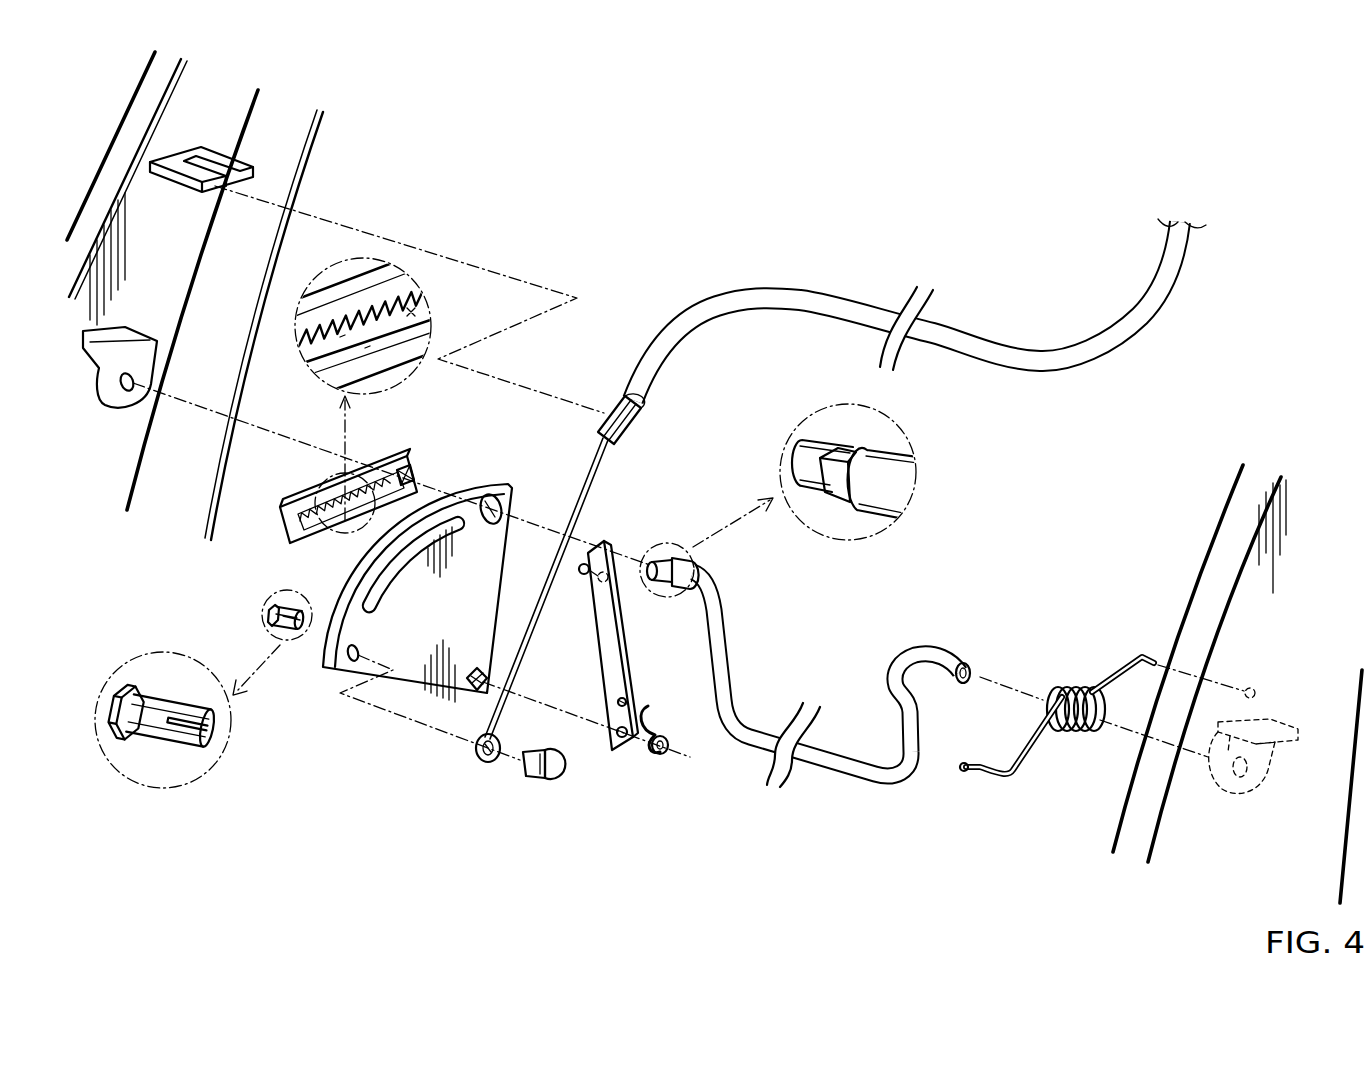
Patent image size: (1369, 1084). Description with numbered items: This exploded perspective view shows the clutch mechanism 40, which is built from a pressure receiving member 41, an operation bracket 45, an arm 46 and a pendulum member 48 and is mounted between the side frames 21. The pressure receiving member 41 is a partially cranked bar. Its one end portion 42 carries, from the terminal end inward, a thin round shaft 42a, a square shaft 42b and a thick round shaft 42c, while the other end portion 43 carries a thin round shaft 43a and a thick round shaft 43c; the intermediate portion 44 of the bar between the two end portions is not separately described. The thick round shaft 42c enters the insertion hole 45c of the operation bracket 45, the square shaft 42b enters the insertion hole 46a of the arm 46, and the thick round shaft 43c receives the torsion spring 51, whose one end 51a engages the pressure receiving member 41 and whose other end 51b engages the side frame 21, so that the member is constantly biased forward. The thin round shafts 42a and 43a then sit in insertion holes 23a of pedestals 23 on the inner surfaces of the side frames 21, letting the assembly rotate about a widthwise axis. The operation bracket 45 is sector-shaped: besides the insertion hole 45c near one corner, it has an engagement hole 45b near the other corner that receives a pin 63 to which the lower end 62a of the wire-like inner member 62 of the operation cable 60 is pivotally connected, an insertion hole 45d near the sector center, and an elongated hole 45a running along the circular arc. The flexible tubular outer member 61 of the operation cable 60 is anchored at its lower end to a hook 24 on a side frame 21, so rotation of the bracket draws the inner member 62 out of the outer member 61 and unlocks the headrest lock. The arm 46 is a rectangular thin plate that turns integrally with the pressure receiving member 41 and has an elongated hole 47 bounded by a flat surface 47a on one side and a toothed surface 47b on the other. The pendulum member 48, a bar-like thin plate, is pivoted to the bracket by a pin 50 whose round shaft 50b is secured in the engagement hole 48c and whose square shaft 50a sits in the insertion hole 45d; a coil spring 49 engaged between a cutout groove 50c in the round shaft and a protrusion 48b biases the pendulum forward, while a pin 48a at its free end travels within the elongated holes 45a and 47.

The side frame 21 is at (142, 193).
The pedestal 23 is at (695, 597).
The insertion hole 23a is at (128, 390).
The hook 24 is at (177, 160).
The clutch mechanism 40 is at (828, 561).
The pressure receiving member 41 is at (833, 633).
The one end portion 42 is at (782, 532).
The thin round shaft 42a is at (810, 472).
The square shaft 42b is at (835, 480).
The thick round shaft 42c is at (886, 531).
The other end portion 43 is at (970, 610).
The thin round shaft 43a is at (972, 668).
The thick round shaft 43c is at (942, 616).
The intermediate portion of lock rod 44 is at (865, 780).
The operation bracket 45 is at (423, 615).
The elongated hole 45a is at (385, 590).
The engagement hole 45b is at (350, 663).
The insertion hole 45c is at (500, 505).
The insertion hole 45d is at (470, 690).
The arm 46 is at (366, 381).
The insertion hole 46a is at (415, 470).
The elongated hole 47 is at (424, 312).
The flat surface 47a is at (360, 350).
The toothed surface 47b is at (338, 338).
The pendulum member 48 is at (613, 682).
The pin 48a is at (586, 575).
The protrusion 48b is at (628, 698).
The engagement hole 48c is at (624, 740).
The coil spring 49 is at (668, 745).
The pin 50 is at (196, 716).
The square shaft 50a is at (150, 738).
The round shaft 50b is at (177, 747).
The cutout groove 50c is at (205, 737).
The torsion spring 51 is at (1057, 708).
The one end 51a is at (968, 772).
The other end 51b is at (1135, 650).
The operation cable 60 is at (919, 326).
The outer member 61 is at (1067, 362).
The inner member 62 is at (568, 623).
The wire end fitting 62a is at (486, 762).
The pin 63 is at (553, 780).